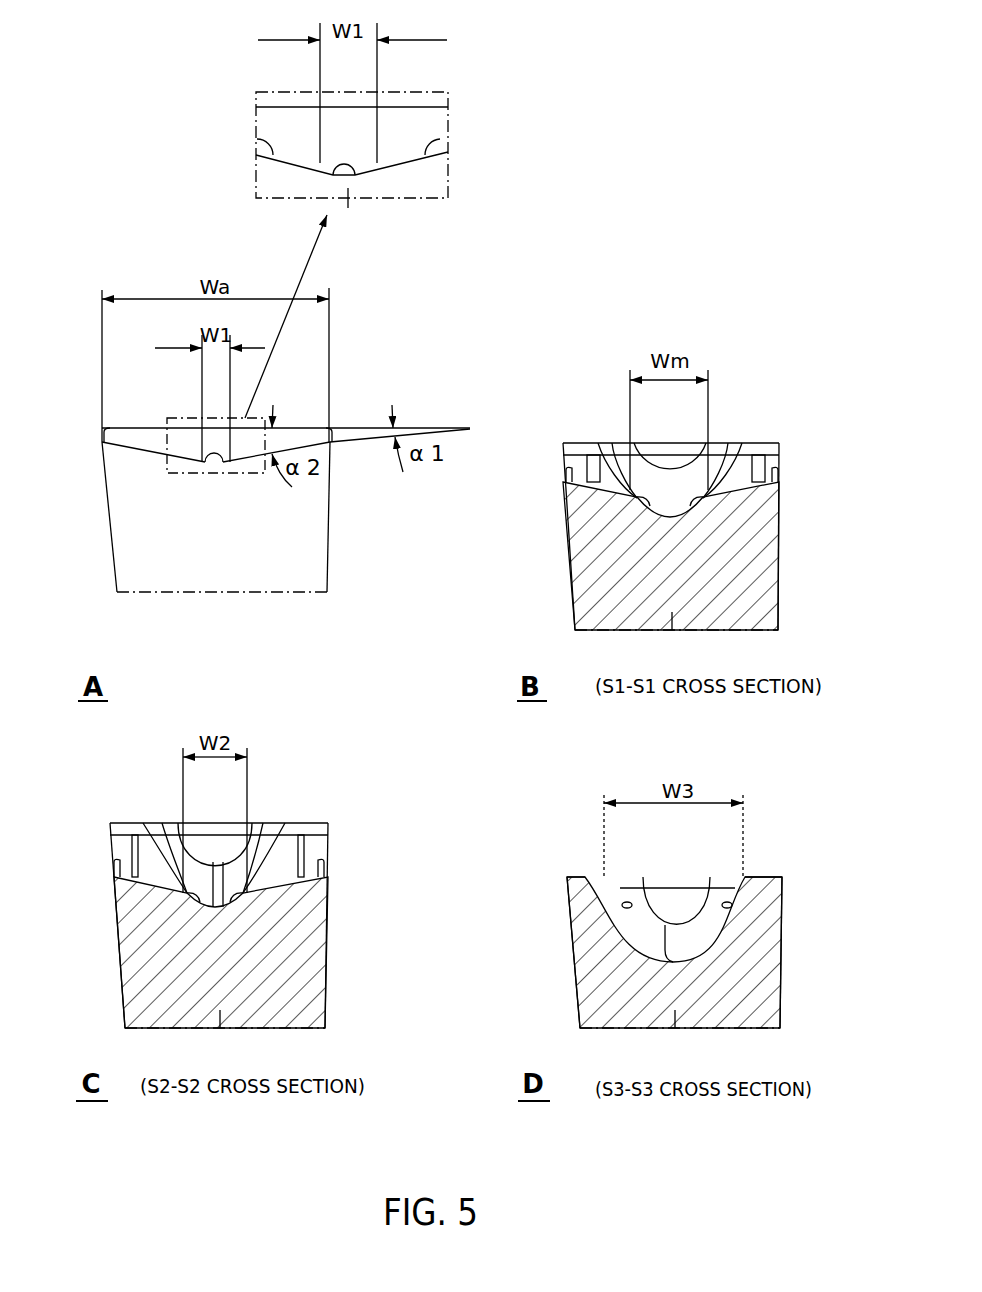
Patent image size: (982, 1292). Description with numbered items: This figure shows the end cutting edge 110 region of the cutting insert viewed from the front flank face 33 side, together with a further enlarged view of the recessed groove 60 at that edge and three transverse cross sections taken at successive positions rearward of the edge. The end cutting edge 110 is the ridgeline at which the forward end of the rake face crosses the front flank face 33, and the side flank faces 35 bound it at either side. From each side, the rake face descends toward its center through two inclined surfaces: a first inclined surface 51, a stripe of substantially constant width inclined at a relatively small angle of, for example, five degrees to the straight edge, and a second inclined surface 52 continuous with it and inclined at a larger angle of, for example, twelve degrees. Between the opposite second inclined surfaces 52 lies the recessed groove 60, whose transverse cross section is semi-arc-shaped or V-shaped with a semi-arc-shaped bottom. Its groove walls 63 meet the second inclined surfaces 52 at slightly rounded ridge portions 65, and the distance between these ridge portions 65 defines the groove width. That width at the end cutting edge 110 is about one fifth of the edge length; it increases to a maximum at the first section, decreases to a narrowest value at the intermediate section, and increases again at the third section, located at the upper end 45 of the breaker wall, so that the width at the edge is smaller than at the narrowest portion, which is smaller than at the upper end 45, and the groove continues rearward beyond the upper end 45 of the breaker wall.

The front flank face 33 is at (303, 518).
The side flank face 35 is at (105, 478).
The upper end of the breaker wall 45 is at (582, 877).
The first inclined surface 51 is at (110, 428).
The second inclined surface 52 is at (257, 139).
The recessed groove 60 is at (340, 165).
The groove wall 63 is at (643, 501).
The ridge portion 65 is at (652, 442).
The end cutting edge 110 is at (157, 443).